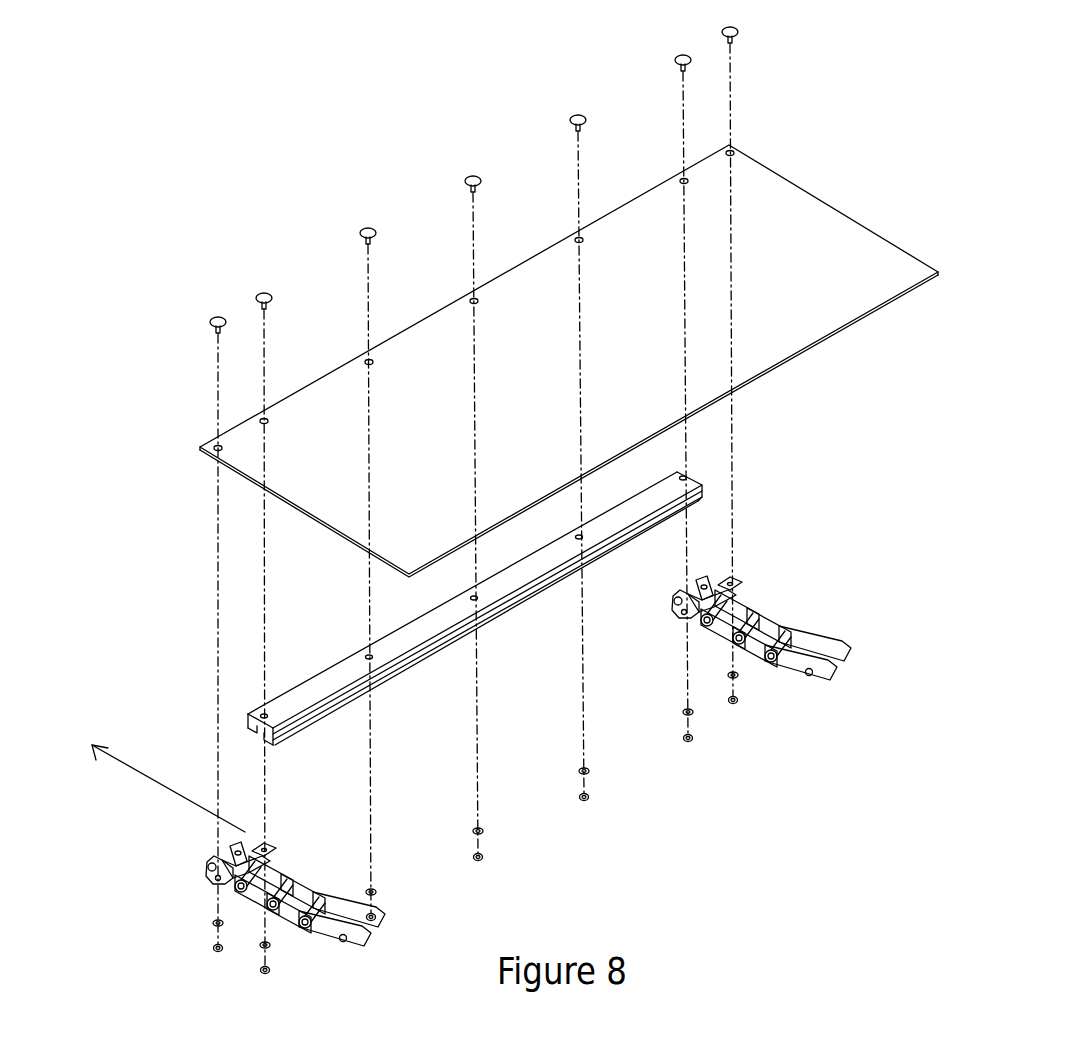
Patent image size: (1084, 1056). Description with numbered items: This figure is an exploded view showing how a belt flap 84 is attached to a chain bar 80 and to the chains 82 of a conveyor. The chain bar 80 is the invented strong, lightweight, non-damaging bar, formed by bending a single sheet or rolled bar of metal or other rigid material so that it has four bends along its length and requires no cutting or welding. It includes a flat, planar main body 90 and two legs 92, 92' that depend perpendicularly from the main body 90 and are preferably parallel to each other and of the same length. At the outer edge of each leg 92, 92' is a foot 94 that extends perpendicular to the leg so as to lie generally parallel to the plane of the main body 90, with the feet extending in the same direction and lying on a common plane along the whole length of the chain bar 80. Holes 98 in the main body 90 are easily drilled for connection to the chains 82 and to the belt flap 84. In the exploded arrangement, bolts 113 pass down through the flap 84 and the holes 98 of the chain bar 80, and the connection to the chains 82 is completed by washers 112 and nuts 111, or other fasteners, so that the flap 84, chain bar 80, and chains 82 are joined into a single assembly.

The chain bar 80 is at (339, 630).
The chain 82 is at (300, 883).
The belt flap 84 is at (737, 338).
The main body 90 is at (416, 644).
The leg 92 is at (189, 701).
The leg 92' is at (487, 624).
The foot 94 is at (257, 733).
The hole 98 is at (472, 596).
The nut 111 is at (688, 738).
The washer 112 is at (583, 773).
The bolt 113 is at (570, 115).